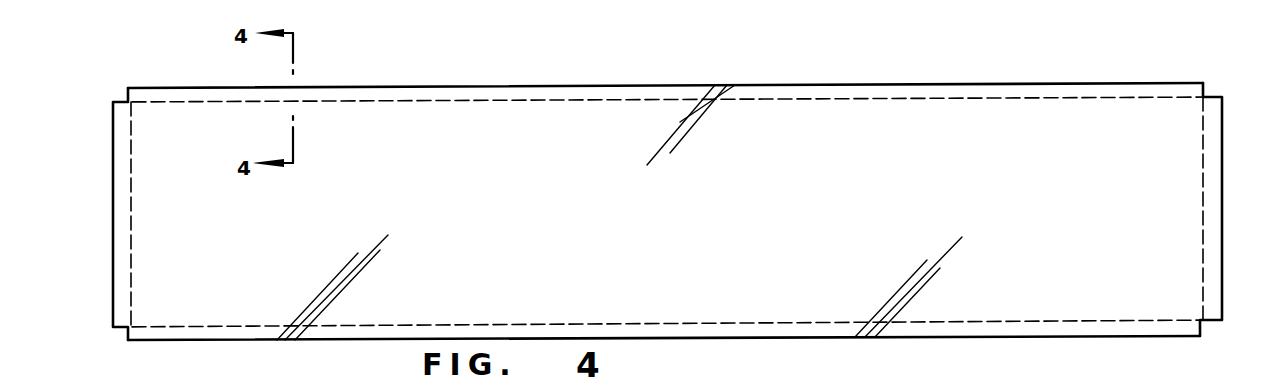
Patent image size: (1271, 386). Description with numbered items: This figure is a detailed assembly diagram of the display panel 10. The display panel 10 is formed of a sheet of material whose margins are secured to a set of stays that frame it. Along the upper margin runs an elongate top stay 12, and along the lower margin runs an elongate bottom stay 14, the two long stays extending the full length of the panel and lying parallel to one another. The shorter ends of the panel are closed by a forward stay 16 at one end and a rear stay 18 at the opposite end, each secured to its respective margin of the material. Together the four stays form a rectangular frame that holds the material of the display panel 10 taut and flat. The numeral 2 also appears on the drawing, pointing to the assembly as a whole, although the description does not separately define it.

The tray assembly 2 is at (1041, 64).
The display panel 10 is at (944, 150).
The elongate top stay 12 is at (837, 90).
The elongate bottom stay 14 is at (757, 330).
The forward stay 16 is at (123, 268).
The rear stay 18 is at (1213, 127).